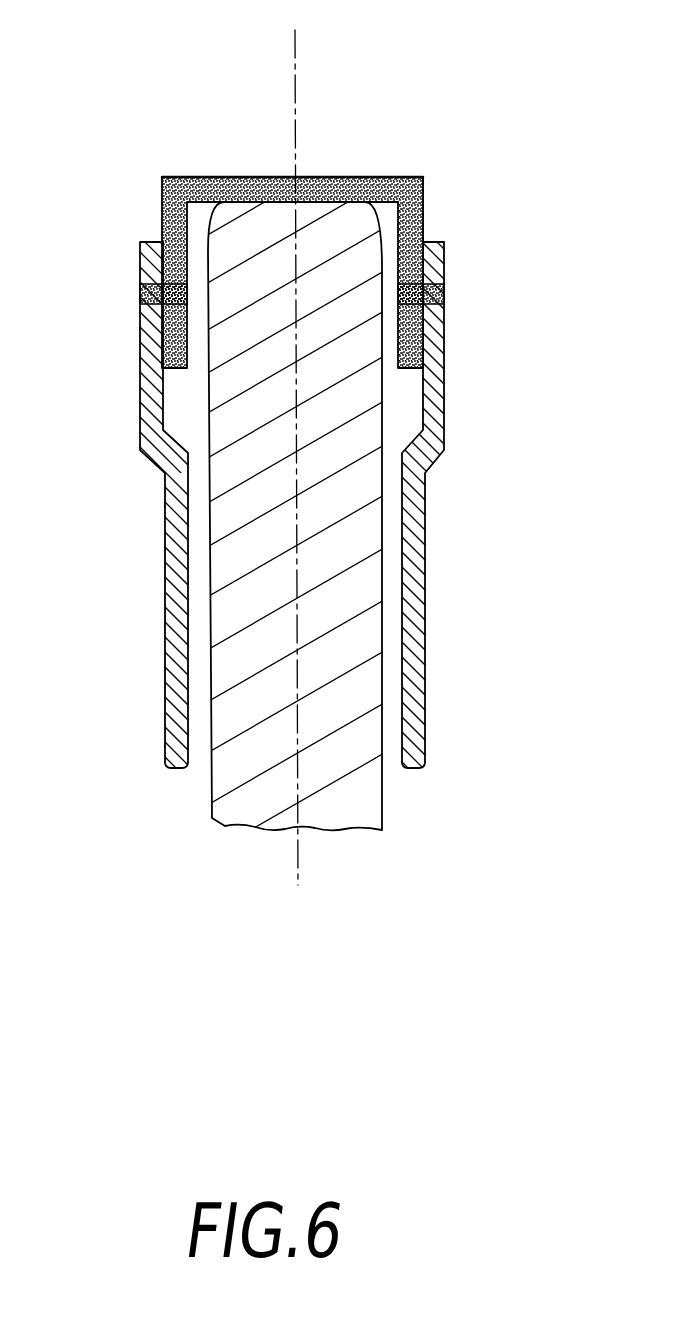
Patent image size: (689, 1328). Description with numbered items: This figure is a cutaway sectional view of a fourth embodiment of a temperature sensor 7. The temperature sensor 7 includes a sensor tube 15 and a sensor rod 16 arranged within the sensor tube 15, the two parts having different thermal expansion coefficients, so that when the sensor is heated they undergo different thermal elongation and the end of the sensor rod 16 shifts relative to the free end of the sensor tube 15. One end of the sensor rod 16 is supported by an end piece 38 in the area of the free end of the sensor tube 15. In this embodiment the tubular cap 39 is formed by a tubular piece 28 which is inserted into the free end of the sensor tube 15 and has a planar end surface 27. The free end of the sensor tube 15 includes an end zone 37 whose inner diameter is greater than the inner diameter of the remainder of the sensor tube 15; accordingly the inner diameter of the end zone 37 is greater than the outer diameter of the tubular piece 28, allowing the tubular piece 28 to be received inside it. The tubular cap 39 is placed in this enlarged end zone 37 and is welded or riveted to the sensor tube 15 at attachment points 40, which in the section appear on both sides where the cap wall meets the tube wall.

The temperature sensor 7 is at (297, 442).
The sensor tube 15 is at (415, 568).
The sensor rod 16 is at (367, 793).
The planar end surface 27 is at (372, 180).
The tubular piece 28 is at (423, 227).
The end zone 37 is at (443, 383).
The end piece 38 is at (297, 184).
The tubular cap 39 is at (162, 218).
The attachment points 40 is at (142, 293).